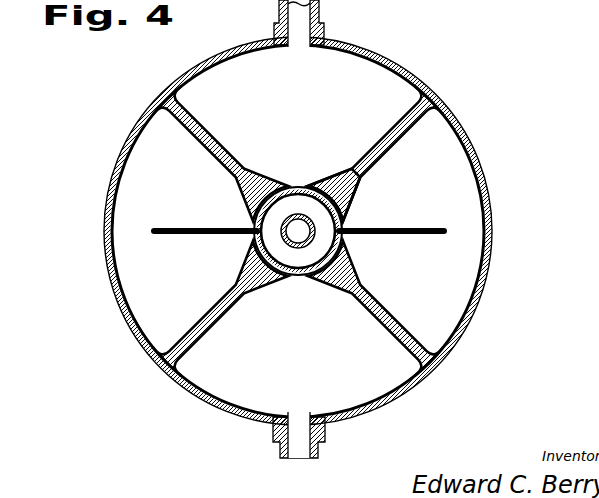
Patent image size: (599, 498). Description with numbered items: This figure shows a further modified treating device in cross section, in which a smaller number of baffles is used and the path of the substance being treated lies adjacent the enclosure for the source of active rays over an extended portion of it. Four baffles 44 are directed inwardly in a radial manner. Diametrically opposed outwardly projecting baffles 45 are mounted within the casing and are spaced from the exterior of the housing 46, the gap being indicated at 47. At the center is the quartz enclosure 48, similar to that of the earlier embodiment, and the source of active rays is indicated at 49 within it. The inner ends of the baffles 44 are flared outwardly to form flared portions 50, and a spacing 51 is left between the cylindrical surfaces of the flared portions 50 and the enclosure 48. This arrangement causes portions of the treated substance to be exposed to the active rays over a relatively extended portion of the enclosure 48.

The baffles 44 is at (405, 130).
The outwardly projecting baffles 45 is at (444, 231).
The housing 46 is at (351, 54).
The spacing 47 is at (460, 279).
The quartz enclosure 48 is at (298, 187).
The source of active rays 49 is at (298, 244).
The flared portions 50 is at (352, 187).
The spacing 51 is at (357, 213).